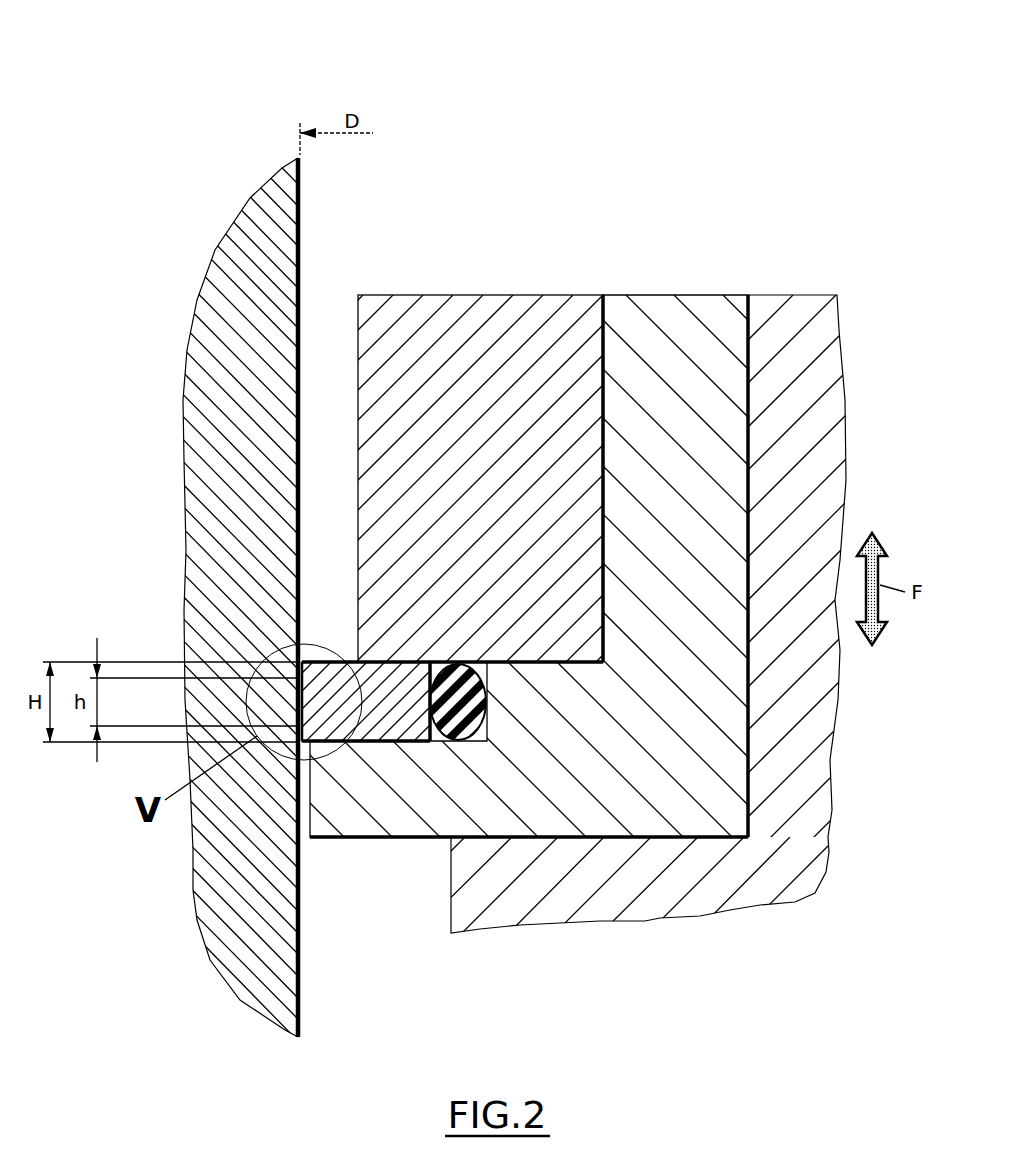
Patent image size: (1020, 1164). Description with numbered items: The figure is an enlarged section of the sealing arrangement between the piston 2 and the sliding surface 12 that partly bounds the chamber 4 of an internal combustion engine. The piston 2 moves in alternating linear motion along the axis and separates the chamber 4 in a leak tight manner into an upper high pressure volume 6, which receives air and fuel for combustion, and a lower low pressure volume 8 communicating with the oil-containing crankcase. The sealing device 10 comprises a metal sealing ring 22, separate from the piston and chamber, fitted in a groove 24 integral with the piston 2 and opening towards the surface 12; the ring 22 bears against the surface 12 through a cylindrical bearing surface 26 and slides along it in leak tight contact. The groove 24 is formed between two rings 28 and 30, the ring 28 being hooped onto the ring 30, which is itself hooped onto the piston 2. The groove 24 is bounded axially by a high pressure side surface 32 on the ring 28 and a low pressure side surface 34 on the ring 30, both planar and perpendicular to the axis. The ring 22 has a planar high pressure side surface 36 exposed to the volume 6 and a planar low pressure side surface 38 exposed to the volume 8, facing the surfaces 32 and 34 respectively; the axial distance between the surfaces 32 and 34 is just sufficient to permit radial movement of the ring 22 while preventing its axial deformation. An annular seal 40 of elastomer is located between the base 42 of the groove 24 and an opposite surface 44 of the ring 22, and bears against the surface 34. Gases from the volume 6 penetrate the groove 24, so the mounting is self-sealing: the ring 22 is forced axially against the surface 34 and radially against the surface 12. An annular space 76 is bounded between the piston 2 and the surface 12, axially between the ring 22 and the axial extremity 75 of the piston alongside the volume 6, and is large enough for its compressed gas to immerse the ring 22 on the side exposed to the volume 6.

The piston 2 is at (844, 381).
The chamber 4 is at (381, 70).
The upper high pressure volume 6 is at (587, 191).
The lower low pressure volume 8 is at (517, 981).
The sealing device 10 is at (476, 282).
The sliding surface 12 is at (275, 215).
The metal sealing ring 22 is at (297, 700).
The groove 24 is at (435, 742).
The cylindrical bearing surface 26 is at (300, 740).
The ring 28 is at (527, 300).
The ring 30 is at (675, 320).
The high pressure side surface 32 is at (390, 675).
The low pressure side surface 34 is at (393, 745).
The high pressure side surface 36 is at (328, 660).
The low pressure side surface 38 is at (313, 757).
The annular seal 40 is at (452, 686).
The base 42 is at (488, 740).
The surface 44 is at (438, 680).
The axial extremity 75 is at (358, 296).
The annular space 76 is at (328, 296).